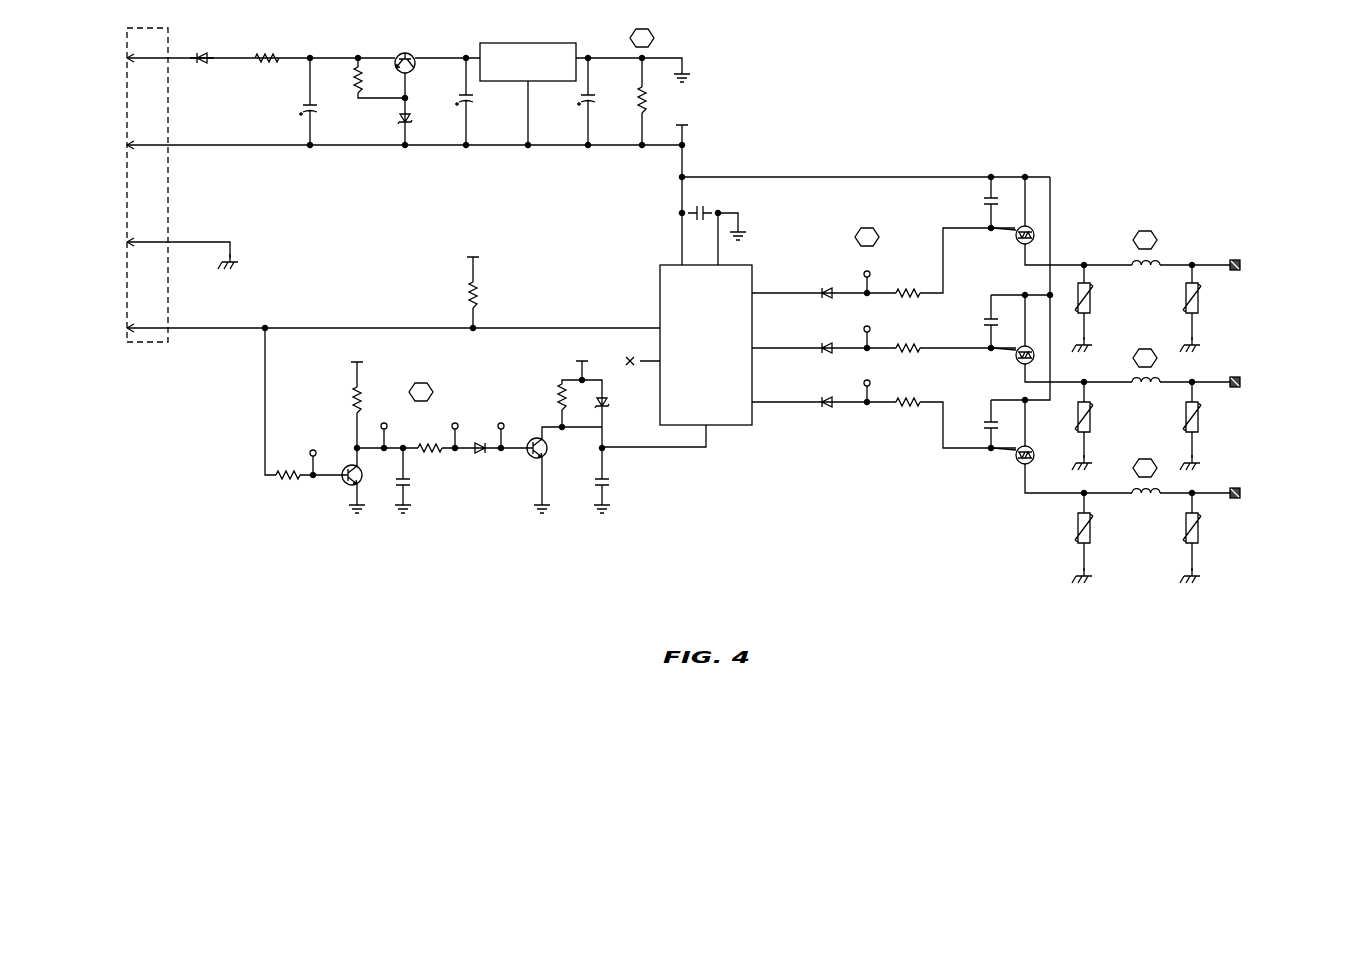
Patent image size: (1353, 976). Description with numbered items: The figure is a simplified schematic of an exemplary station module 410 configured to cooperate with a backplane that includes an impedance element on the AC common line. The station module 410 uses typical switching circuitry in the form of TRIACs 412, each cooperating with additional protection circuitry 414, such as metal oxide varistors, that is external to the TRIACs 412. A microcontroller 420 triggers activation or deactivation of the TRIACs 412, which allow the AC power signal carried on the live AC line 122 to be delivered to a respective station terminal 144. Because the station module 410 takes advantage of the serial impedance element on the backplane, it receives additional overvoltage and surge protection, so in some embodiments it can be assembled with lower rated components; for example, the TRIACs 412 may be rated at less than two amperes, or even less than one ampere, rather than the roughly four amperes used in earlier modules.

The station module 410 is at (1147, 68).
The live AC line 122 is at (205, 147).
The TRIACs 412 is at (1036, 231).
The additional protection circuitry 414 is at (1090, 311).
The station terminal 144 is at (1238, 273).
The microcontroller 420 is at (735, 425).